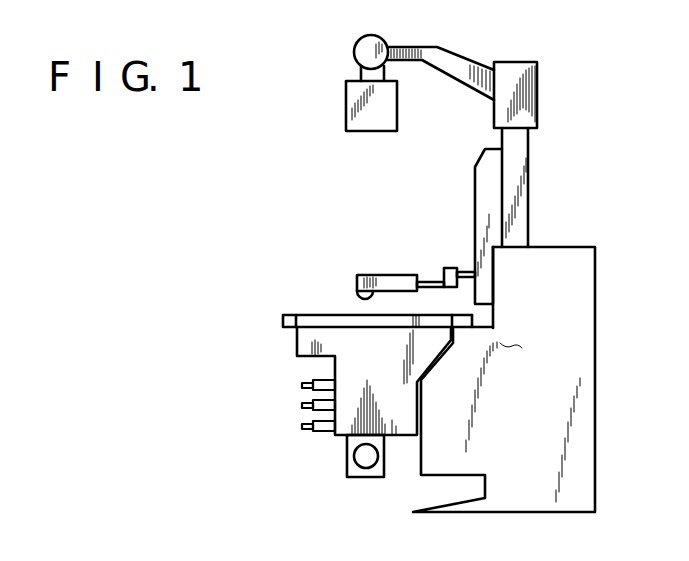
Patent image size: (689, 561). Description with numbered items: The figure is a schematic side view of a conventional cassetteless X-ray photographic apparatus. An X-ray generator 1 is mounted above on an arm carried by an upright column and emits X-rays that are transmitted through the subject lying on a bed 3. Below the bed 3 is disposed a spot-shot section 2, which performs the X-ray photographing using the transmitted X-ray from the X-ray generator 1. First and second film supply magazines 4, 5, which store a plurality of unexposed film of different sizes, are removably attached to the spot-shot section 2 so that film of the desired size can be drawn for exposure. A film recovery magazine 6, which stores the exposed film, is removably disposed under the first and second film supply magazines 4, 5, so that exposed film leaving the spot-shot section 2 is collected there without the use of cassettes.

The X-ray generator 1 is at (345, 97).
The spot-shot section 2 is at (297, 346).
The bed 3 is at (474, 324).
The first film supply magazine 4 is at (302, 385).
The second film supply magazine 5 is at (302, 406).
The film recovery magazine 6 is at (302, 427).